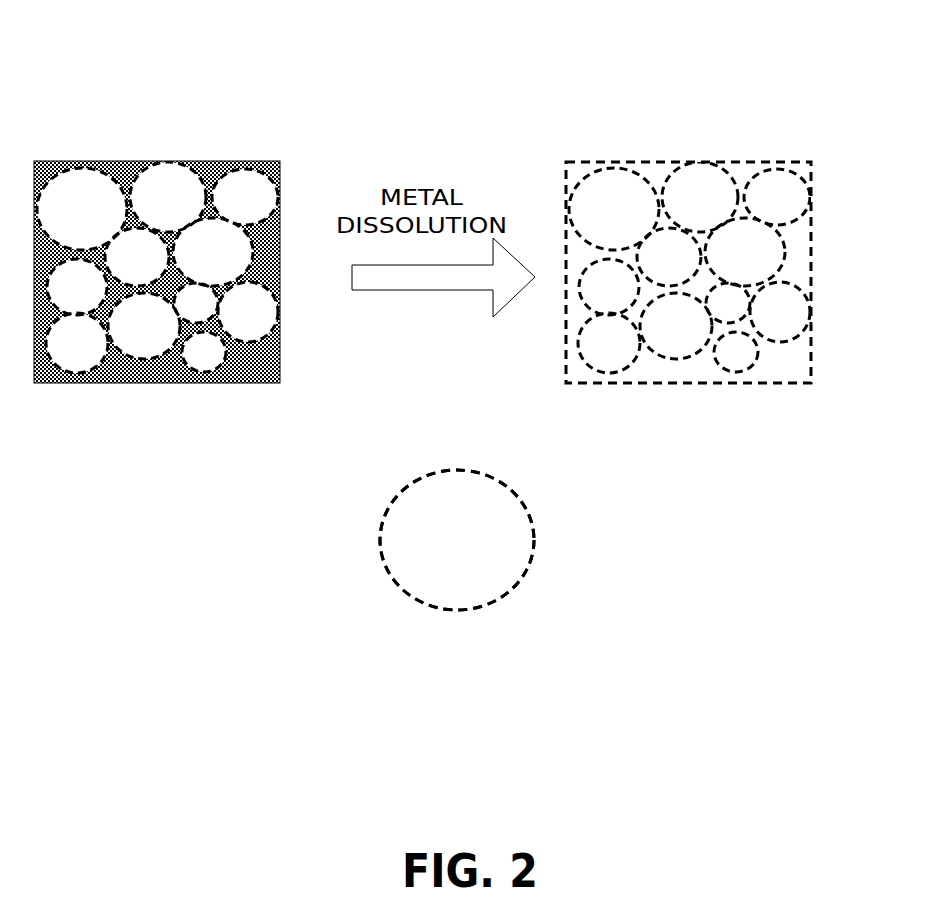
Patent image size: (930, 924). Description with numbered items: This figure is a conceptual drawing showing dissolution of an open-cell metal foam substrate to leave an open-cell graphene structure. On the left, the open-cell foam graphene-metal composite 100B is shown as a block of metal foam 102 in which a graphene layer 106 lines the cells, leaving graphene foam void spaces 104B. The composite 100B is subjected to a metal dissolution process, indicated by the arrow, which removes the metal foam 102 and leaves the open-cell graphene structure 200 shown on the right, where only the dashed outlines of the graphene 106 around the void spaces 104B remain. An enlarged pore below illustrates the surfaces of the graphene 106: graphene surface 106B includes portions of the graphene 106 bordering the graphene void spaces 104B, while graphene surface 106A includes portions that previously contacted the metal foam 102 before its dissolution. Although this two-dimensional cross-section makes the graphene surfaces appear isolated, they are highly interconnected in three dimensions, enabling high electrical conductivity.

The open-cell foam graphene-metal composite 100B is at (156, 240).
The open-cell graphene structure 200 is at (678, 88).
The metal foam 102 is at (130, 373).
The graphene foam void spaces 104B is at (117, 218).
The graphene layer 106 is at (203, 372).
The graphene surface 106A is at (518, 582).
The graphene surface 106B is at (392, 563).